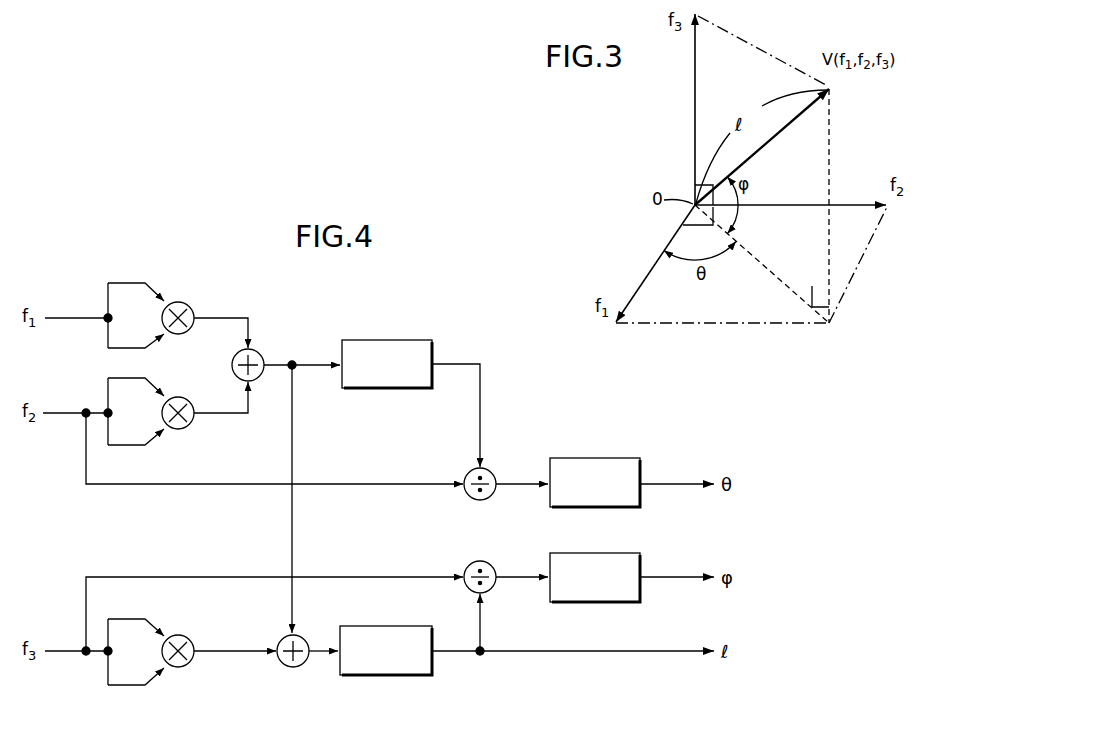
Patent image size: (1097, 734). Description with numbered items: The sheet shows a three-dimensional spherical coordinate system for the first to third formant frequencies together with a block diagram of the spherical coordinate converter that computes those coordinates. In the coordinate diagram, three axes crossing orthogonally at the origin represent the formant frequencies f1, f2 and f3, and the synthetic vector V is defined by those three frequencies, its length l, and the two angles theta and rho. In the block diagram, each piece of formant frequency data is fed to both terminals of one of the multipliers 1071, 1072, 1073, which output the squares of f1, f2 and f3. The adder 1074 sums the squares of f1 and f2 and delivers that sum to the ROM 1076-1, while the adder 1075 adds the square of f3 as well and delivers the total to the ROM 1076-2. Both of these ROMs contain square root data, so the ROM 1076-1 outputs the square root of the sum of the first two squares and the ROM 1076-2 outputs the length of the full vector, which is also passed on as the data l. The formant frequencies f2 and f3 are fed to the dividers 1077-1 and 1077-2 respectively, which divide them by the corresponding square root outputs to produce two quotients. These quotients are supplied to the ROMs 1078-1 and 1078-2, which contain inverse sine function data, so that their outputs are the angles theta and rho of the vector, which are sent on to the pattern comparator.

The multiplier 1071 is at (189, 306).
The multiplier 1072 is at (189, 424).
The multiplier 1073 is at (189, 640).
The adder 1074 is at (259, 354).
The adder 1075 is at (282, 662).
The ROM 1076-1 is at (366, 340).
The ROM 1076-2 is at (432, 672).
The divider 1077-1 is at (468, 496).
The divider 1077-2 is at (469, 566).
The ROM 1078-1 is at (612, 458).
The ROM 1078-2 is at (610, 553).